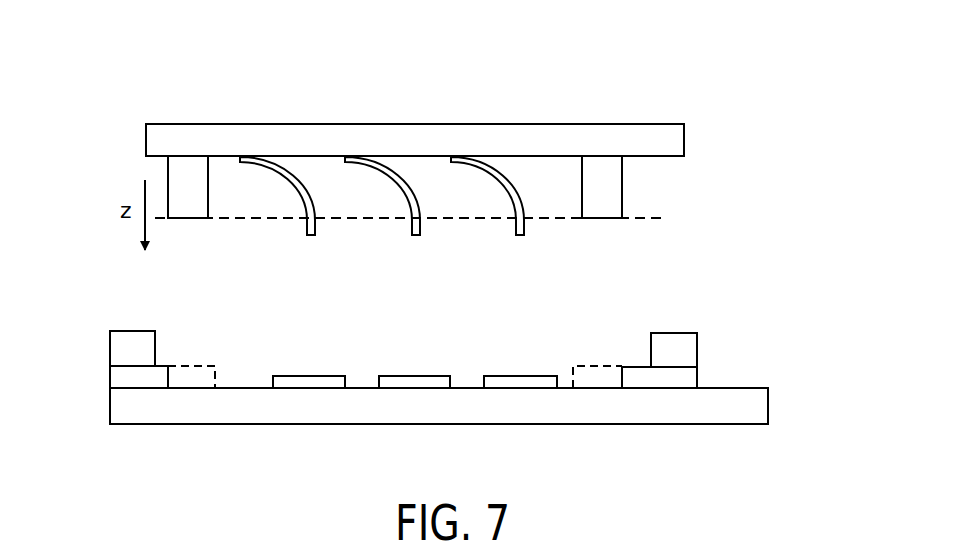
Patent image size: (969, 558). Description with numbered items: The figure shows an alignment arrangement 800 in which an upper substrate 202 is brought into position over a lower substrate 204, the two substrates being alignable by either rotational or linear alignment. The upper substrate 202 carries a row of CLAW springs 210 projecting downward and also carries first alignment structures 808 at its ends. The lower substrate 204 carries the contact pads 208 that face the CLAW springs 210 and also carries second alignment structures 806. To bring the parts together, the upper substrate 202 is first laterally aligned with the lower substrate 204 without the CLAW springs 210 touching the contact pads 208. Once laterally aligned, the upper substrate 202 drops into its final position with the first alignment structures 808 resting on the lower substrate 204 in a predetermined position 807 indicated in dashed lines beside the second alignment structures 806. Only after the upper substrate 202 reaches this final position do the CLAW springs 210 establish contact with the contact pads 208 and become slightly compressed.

The assembly of top and bottom substrates with alignment structures 800 is at (529, 88).
The upper substrate 202 is at (417, 125).
The lower substrate 204 is at (430, 415).
The contact pads 208 is at (522, 376).
The CLAW springs 210 is at (415, 236).
The second alignment structures 806 is at (110, 348).
The predetermined position 807 is at (197, 366).
The first alignment structures 808 is at (188, 172).